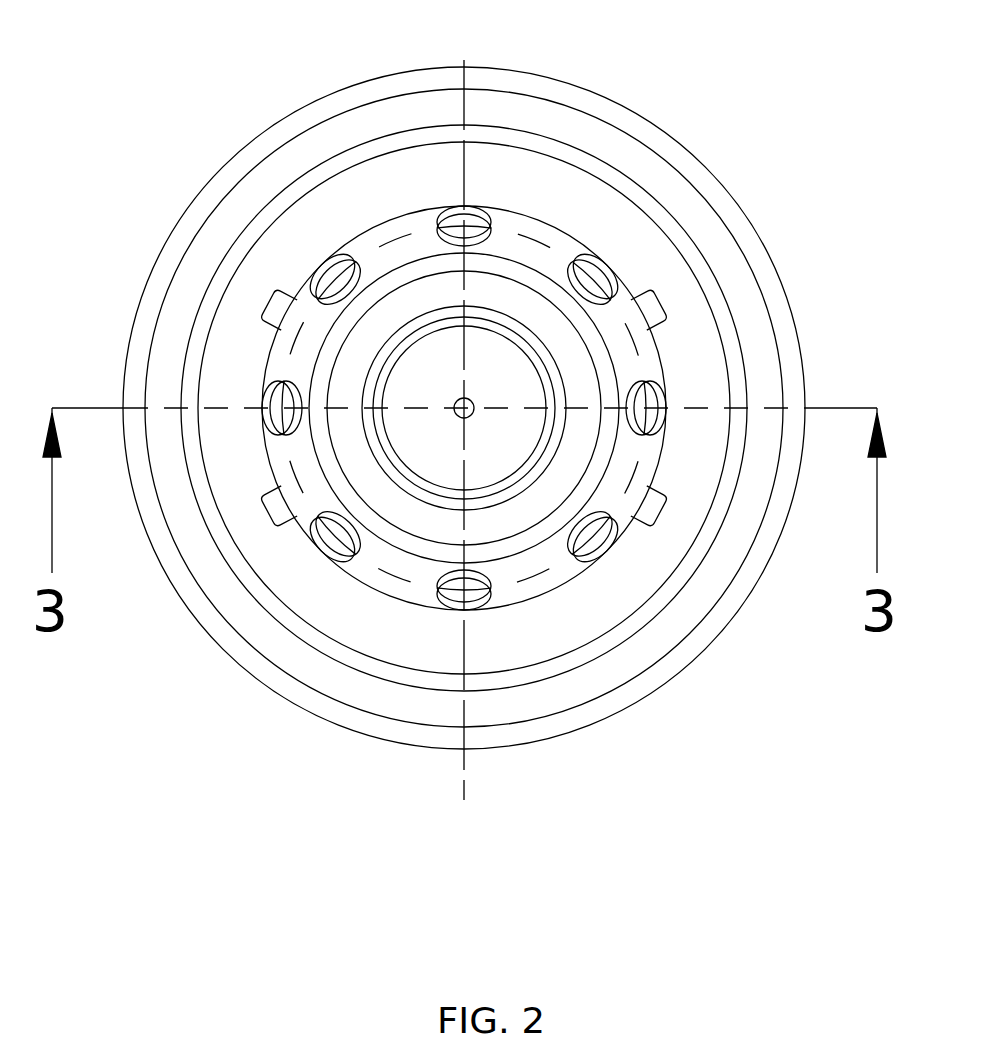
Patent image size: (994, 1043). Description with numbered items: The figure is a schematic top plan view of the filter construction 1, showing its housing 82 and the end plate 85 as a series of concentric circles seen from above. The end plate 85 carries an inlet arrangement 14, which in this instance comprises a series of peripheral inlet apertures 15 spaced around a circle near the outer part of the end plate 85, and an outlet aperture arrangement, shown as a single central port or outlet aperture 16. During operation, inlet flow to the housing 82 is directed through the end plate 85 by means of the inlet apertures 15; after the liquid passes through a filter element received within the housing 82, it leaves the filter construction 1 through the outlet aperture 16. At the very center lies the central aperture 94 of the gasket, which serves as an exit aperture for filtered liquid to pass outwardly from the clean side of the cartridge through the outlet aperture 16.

The filter construction 1 is at (274, 88).
The housing 82 is at (685, 147).
The end plate 85 is at (505, 247).
The peripheral inlet apertures 15 is at (473, 230).
The inlet arrangement 14 is at (402, 532).
The outlet aperture 16 is at (483, 330).
The central aperture 94 is at (475, 405).